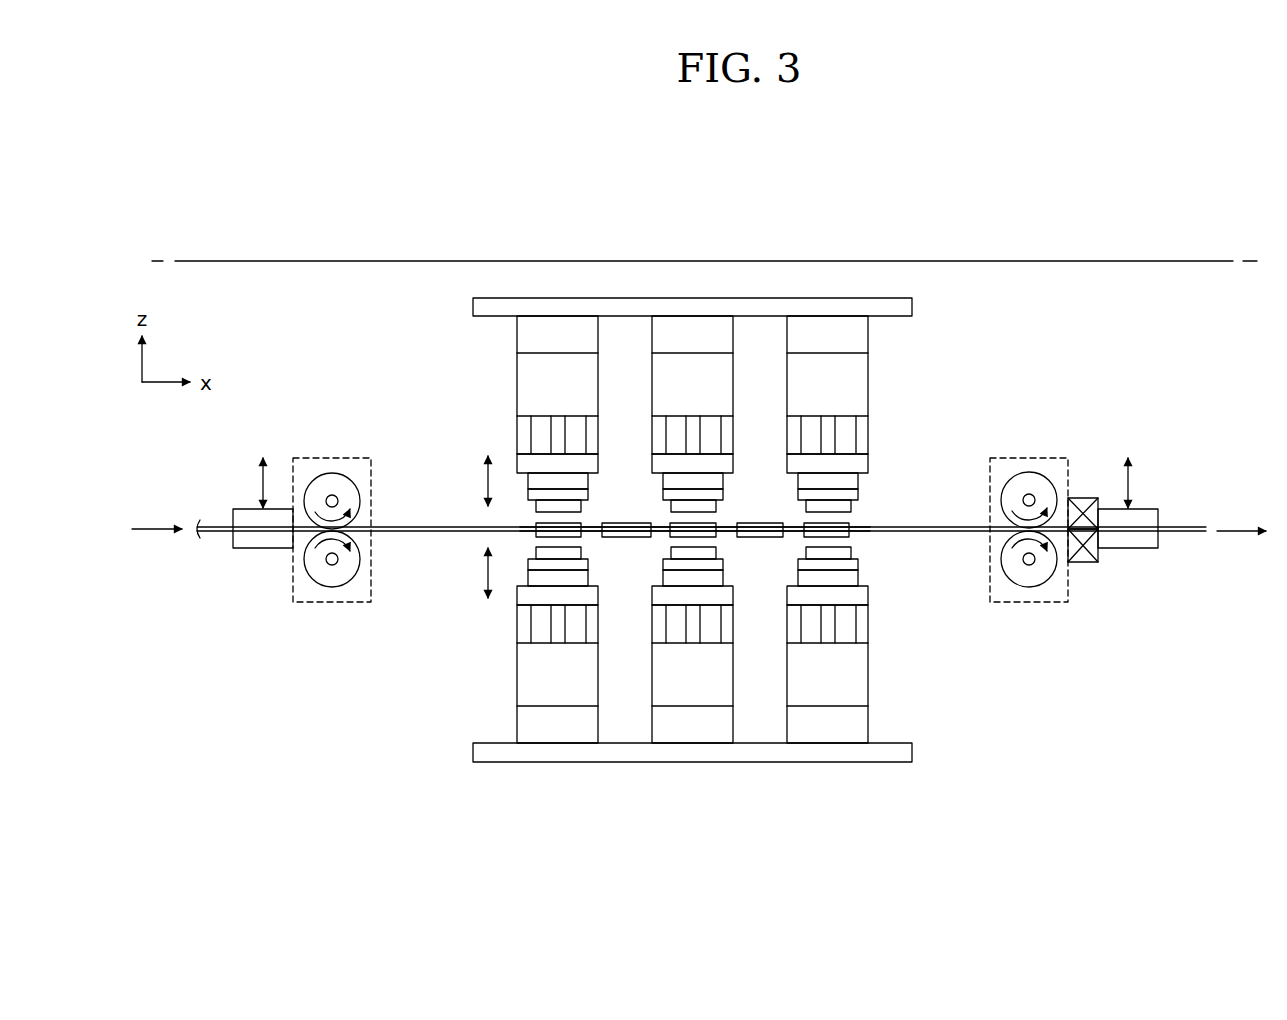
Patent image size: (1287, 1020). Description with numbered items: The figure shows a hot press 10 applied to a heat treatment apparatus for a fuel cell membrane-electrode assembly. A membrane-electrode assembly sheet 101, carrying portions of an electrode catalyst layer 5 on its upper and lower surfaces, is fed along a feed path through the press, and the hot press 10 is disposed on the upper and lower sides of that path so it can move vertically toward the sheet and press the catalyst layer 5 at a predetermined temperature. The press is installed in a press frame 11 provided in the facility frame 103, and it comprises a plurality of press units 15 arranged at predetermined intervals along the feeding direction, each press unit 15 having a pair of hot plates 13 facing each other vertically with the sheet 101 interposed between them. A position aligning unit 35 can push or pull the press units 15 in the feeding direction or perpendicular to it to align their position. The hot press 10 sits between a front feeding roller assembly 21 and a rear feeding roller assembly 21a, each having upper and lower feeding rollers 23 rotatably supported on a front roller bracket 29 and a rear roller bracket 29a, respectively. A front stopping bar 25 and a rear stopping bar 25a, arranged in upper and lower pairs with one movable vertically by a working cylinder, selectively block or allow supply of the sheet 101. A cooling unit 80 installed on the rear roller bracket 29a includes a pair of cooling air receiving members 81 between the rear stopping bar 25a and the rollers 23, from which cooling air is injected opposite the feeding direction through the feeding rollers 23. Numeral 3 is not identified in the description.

The laminated product / strip 3 is at (593, 527).
The electrode catalyst layer 5 is at (550, 535).
The hot press 10 is at (718, 512).
The press frame 11 is at (908, 307).
The hot plates 13 is at (803, 553).
The press units 15 is at (510, 438).
The front feeding roller assembly 21 is at (282, 570).
The rear feeding roller assembly 21a is at (1046, 571).
The upper and lower feeding rollers 23 is at (360, 558).
The front stopping bar 25 is at (243, 505).
The rear stopping bar 25a is at (1156, 505).
The front roller bracket 29 is at (292, 580).
The rear roller bracket 29a is at (1048, 605).
The position aligning unit 35 is at (522, 343).
The cooling unit 80 is at (1119, 524).
The cooling air receiving members 81 is at (1085, 497).
The membrane-electrode assembly sheet 101 is at (427, 538).
The facility frame 103 is at (321, 261).